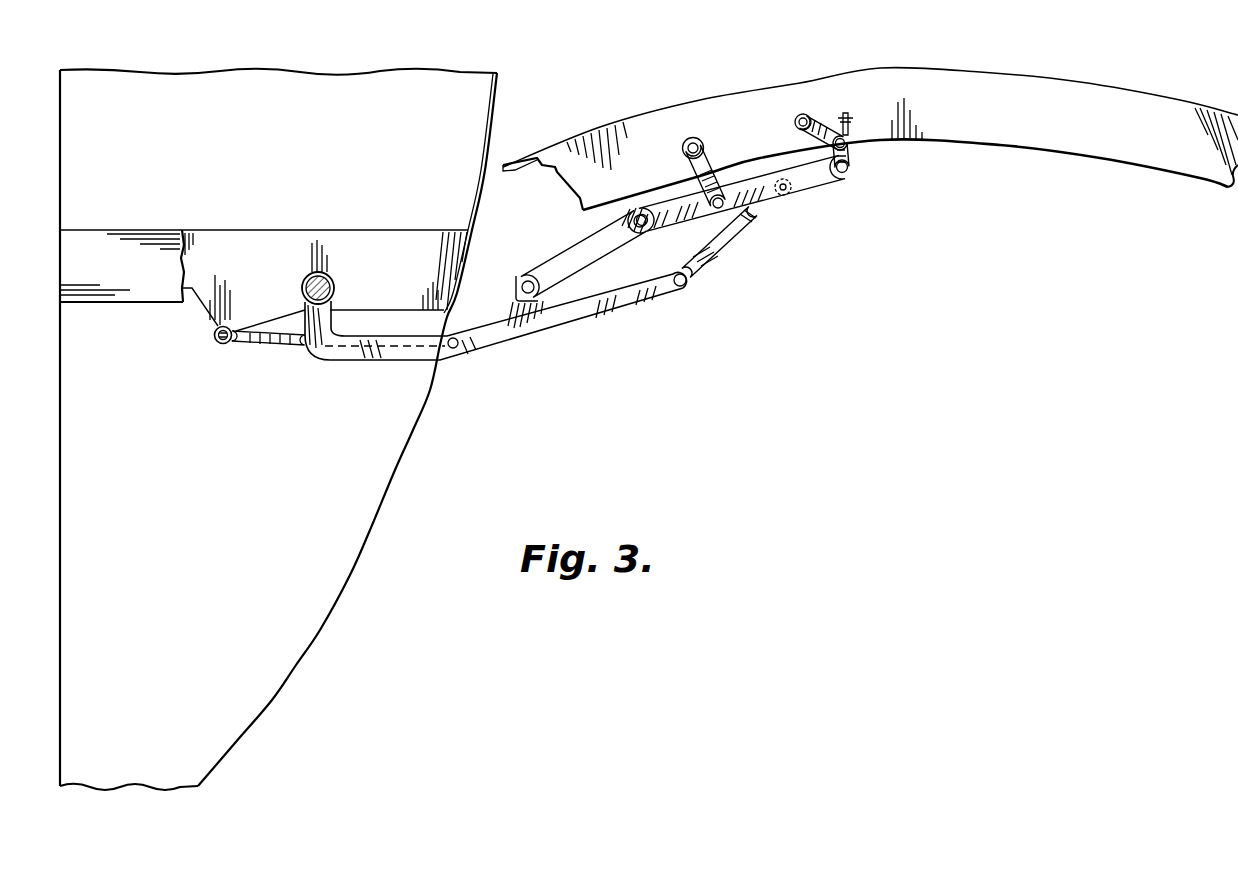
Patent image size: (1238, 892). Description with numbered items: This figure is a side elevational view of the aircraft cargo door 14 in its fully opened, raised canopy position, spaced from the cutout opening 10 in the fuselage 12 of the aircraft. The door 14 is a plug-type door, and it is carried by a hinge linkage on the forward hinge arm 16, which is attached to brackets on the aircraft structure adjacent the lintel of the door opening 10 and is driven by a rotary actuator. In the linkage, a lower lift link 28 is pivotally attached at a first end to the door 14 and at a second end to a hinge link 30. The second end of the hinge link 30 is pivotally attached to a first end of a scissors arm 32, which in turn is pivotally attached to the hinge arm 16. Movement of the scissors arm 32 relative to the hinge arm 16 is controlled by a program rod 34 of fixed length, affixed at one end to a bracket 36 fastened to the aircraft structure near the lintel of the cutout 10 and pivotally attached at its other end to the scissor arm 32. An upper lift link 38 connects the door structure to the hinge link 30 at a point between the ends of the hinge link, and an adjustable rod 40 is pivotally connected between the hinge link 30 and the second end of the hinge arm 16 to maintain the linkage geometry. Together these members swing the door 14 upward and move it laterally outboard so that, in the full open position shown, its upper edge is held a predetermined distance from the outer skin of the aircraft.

The cutout opening 10 is at (306, 623).
The fuselage 12 is at (500, 84).
The door 14 is at (1067, 130).
The forward hinge arm 16 is at (407, 353).
The lower lift link 28 is at (800, 140).
The hinge link 30 is at (812, 183).
The scissors arm 32 is at (555, 260).
The program rod 34 is at (297, 347).
The bracket 36 is at (203, 322).
The upper lift link 38 is at (707, 170).
The adjustable rod 40 is at (707, 267).